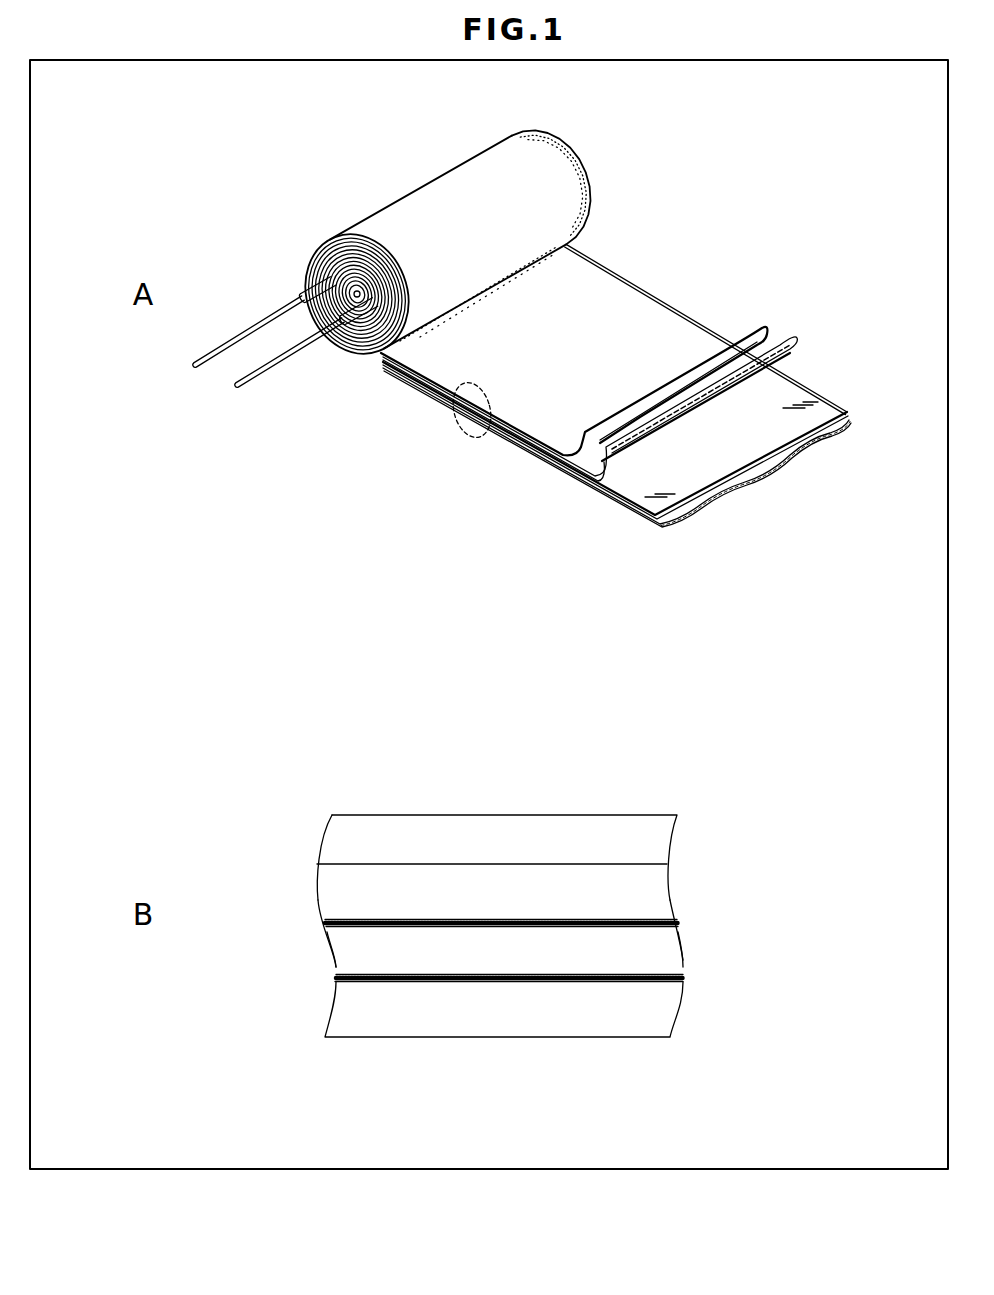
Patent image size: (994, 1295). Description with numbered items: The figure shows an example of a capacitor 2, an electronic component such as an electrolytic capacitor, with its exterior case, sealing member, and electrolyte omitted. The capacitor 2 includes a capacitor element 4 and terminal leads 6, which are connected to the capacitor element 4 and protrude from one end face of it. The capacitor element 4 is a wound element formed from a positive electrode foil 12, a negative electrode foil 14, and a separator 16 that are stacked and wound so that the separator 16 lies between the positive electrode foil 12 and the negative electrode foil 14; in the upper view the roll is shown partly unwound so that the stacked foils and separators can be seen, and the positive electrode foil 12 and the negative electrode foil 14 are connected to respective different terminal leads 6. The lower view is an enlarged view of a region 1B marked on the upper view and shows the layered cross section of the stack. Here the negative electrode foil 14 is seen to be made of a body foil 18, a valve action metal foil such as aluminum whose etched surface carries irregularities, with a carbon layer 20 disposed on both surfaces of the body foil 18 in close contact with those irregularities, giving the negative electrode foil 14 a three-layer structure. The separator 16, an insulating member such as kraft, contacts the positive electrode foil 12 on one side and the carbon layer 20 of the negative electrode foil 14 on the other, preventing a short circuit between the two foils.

The capacitor 2 is at (200, 565).
The capacitor element 4 is at (734, 370).
The terminal leads 6 is at (252, 333).
The positive electrode foil 12 is at (695, 338).
The negative electrode foil 14 is at (790, 393).
The separator 16 is at (779, 334).
The body foil 18 is at (660, 952).
The carbon layer 20 is at (675, 923).
The region IB 1B is at (466, 431).